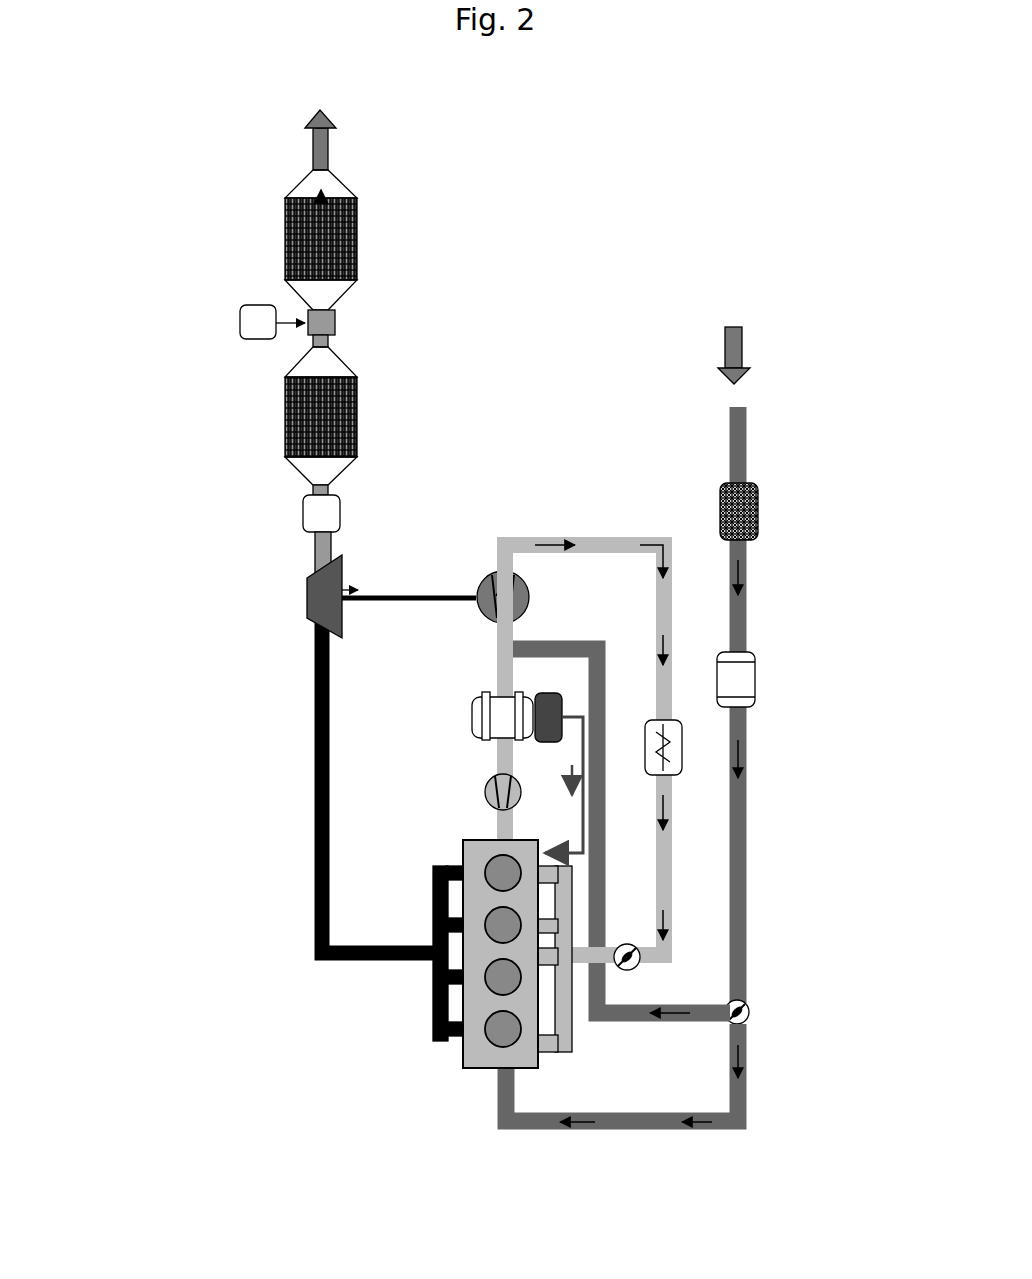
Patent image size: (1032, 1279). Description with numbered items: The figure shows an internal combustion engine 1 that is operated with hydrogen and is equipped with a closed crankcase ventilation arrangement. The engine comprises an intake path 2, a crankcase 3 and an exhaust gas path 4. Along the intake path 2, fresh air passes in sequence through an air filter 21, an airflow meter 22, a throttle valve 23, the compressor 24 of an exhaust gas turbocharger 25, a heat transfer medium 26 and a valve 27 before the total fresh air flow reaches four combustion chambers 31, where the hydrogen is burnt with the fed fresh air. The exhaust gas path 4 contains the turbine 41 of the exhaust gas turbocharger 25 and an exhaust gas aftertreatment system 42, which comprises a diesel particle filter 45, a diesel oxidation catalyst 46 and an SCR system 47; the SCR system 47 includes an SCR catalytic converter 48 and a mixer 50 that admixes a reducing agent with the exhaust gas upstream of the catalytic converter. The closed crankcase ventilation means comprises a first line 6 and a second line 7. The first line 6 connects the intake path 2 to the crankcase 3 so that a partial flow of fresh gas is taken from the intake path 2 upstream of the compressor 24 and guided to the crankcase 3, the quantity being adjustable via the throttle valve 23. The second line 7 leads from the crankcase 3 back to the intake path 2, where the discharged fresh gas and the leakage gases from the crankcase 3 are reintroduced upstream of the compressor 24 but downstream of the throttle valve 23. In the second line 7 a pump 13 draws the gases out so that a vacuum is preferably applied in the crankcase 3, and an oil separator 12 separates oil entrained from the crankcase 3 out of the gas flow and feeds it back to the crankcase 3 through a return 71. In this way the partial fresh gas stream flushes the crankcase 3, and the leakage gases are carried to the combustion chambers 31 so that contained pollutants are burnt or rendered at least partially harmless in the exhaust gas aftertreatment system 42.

The internal combustion engine 1 is at (230, 148).
The intake path 2 is at (682, 776).
The crankcase 3 is at (318, 995).
The exhaust gas path 4 is at (230, 683).
The first line 6 is at (618, 1133).
The second line 7 is at (496, 672).
The oil separator 12 is at (472, 727).
The pump 13 is at (485, 790).
The air filter 21 is at (760, 502).
The airflow meter 22 is at (755, 680).
The throttle valve 23 is at (750, 1010).
The compressor 24 is at (530, 597).
The exhaust gas turbocharger 25 is at (371, 569).
The heat transfer medium 26 is at (682, 748).
The valve 27 is at (625, 940).
The combustion chambers 31 is at (503, 1031).
The turbine 41 is at (310, 590).
The exhaust gas aftertreatment system 42 is at (221, 441).
The diesel particle filter 45 is at (303, 511).
The diesel oxidation catalyst 46 is at (285, 428).
The SCR system 47 is at (281, 254).
The SCR catalytic converter 48 is at (357, 257).
The mixer 50 is at (335, 321).
The return 71 is at (583, 753).